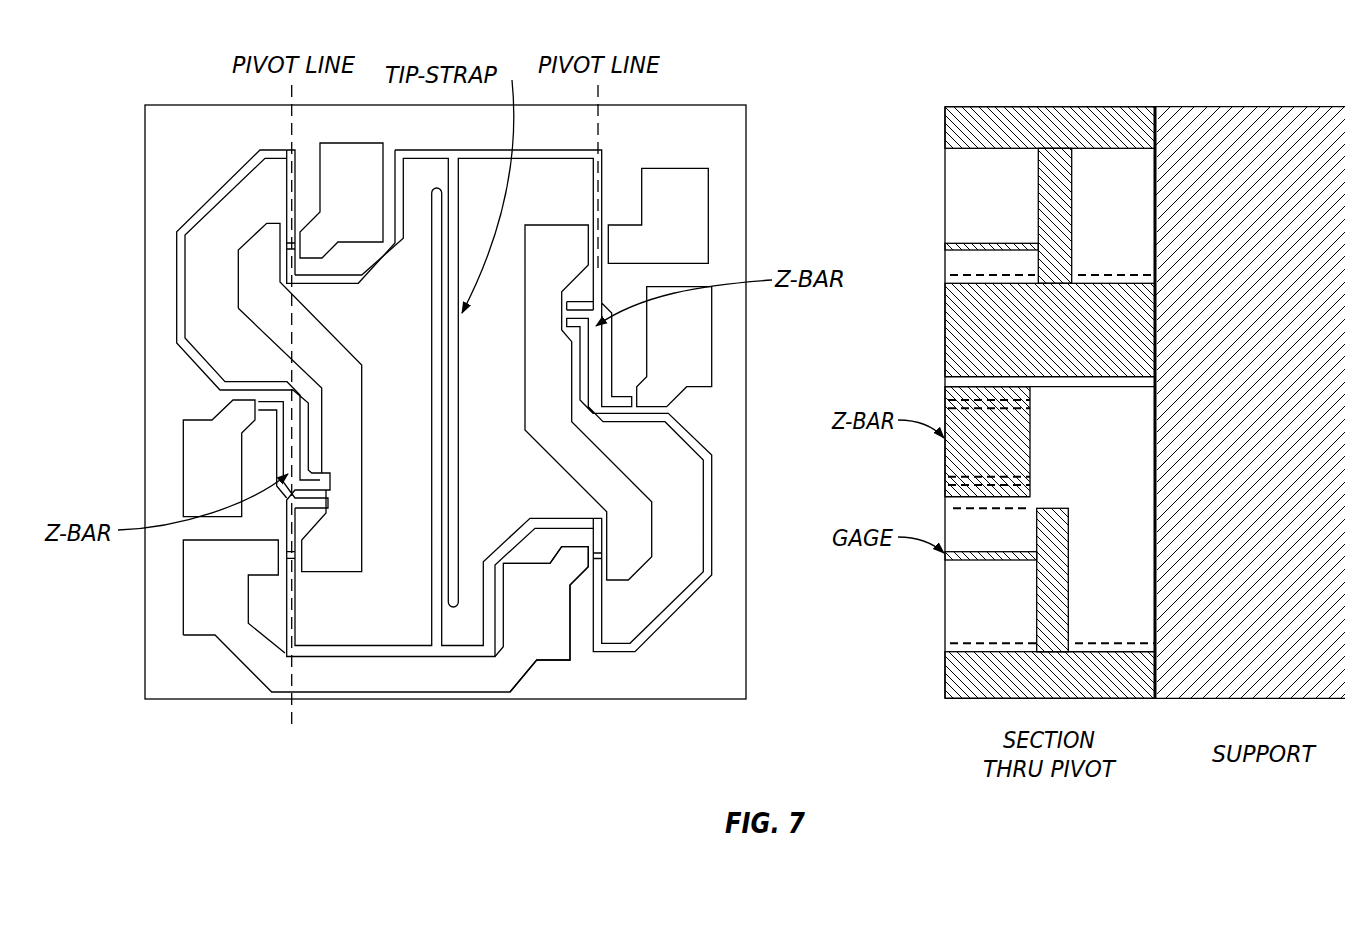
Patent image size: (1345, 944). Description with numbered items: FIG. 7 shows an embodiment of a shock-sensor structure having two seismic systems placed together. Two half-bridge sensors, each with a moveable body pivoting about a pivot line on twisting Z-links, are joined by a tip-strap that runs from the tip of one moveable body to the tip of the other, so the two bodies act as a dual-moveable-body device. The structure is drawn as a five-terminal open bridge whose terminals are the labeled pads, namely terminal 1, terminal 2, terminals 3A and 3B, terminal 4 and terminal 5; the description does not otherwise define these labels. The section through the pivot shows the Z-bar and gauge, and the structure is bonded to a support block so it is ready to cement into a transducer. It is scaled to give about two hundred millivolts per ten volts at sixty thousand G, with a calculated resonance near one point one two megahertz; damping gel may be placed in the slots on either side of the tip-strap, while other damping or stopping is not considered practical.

The contact pad 1 is at (669, 226).
The contact pad 2 is at (672, 349).
The contact pad 3A is at (522, 622).
The contact pad 3B is at (200, 602).
The contact pad 4 is at (204, 479).
The contact pad 5 is at (342, 204).